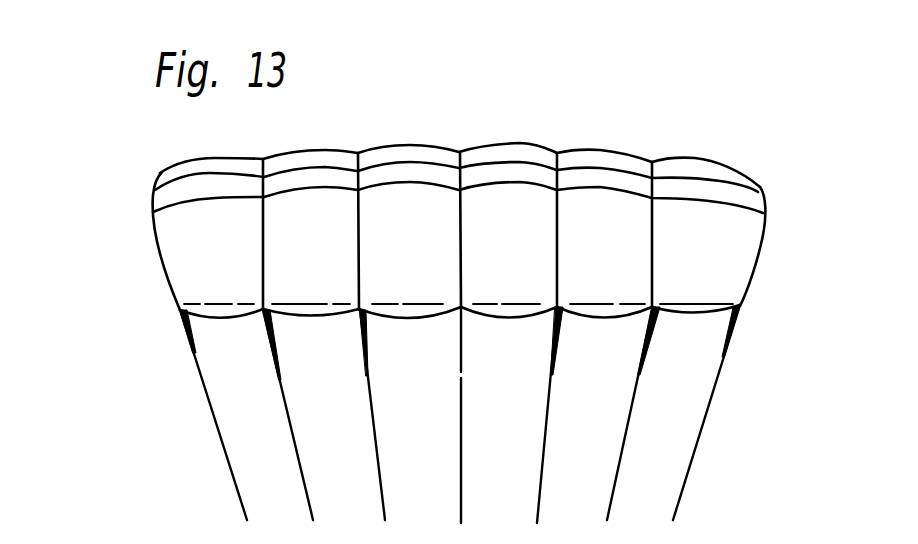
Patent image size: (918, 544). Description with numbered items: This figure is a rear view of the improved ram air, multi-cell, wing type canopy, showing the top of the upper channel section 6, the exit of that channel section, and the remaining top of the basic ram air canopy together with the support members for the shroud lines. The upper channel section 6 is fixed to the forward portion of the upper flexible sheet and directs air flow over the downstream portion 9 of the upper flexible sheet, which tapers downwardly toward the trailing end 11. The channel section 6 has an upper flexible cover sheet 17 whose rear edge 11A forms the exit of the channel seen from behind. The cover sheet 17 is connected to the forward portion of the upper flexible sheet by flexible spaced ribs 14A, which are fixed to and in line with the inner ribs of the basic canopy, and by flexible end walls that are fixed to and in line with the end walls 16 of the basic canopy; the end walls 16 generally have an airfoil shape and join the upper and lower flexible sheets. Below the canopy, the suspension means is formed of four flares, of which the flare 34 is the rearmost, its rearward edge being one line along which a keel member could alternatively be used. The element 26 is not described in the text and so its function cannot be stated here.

The upper channel section 6 is at (708, 149).
The downstream portion of the upper flexible sheet 9 is at (313, 245).
The trailing end 11 is at (323, 313).
The rear edge of the upper flexible cover sheet 11A is at (168, 182).
The flexible spaced ribs 14A is at (268, 186).
The end walls 16 is at (163, 270).
The upper flexible cover sheet 17 is at (218, 162).
The root 26 is at (293, 430).
The flare 34 is at (185, 338).